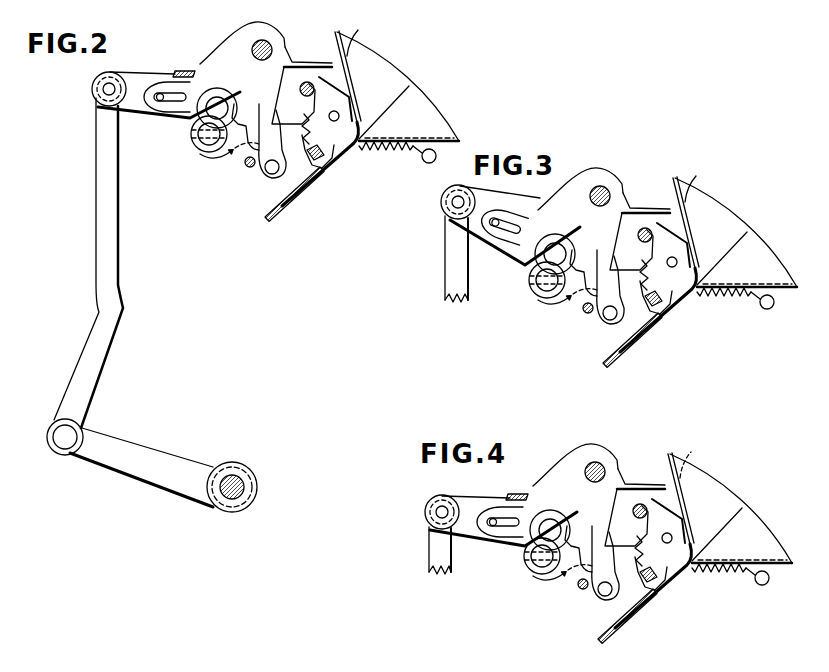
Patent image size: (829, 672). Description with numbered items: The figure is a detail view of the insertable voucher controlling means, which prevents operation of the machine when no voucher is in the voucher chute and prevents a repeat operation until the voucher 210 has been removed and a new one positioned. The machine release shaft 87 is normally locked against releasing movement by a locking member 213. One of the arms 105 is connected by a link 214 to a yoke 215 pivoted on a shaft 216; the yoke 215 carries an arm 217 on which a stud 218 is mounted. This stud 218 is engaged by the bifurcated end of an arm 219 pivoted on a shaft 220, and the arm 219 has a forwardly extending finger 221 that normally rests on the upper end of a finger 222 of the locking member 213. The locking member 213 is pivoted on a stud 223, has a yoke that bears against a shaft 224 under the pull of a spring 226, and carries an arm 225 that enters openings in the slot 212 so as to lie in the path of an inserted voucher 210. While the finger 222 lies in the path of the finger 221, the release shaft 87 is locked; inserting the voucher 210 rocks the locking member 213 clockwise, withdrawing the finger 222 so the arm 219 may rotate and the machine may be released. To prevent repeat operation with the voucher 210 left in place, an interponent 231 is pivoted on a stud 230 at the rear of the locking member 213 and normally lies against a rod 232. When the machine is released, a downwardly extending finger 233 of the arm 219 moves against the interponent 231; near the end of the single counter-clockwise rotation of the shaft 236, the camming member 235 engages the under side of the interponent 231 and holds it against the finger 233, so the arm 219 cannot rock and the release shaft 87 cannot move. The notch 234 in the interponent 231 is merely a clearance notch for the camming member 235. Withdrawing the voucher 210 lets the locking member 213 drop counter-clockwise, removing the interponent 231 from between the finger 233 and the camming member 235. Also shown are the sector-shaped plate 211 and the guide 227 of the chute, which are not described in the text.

In FIG. 2, the machine release shaft 87 is at (236, 473).
In FIG. 2, the arm 105 is at (130, 463).
In FIG. 2, the voucher 210 is at (384, 112).
In FIG. 3, the voucher 210 is at (742, 246).
In FIG. 4, the voucher 210 is at (744, 530).
In FIG. 2, the sector plate 211 is at (398, 86).
In FIG. 3, the sector plate 211 is at (736, 232).
In FIG. 4, the sector plate 211 is at (731, 508).
In FIG. 2, the slot 212 is at (386, 134).
In FIG. 3, the slot 212 is at (724, 283).
In FIG. 4, the slot 212 is at (719, 568).
In FIG. 2, the locking member 213 is at (336, 118).
In FIG. 3, the locking member 213 is at (671, 264).
In FIG. 4, the locking member 213 is at (654, 540).
In FIG. 2, the link 214 is at (111, 263).
In FIG. 3, the link 214 is at (435, 259).
In FIG. 4, the link 214 is at (419, 550).
In FIG. 2, the yoke 215 is at (121, 78).
In FIG. 3, the yoke 215 is at (440, 212).
In FIG. 4, the yoke 215 is at (427, 502).
In FIG. 2, the shaft 216 is at (224, 95).
In FIG. 3, the shaft 216 is at (525, 254).
In FIG. 4, the shaft 216 is at (550, 530).
In FIG. 2, the arm 217 is at (169, 117).
In FIG. 2, the stud 218 is at (152, 73).
In FIG. 3, the stud 218 is at (515, 221).
In FIG. 4, the stud 218 is at (503, 510).
In FIG. 2, the arm 219 is at (238, 43).
In FIG. 3, the arm 219 is at (586, 177).
In FIG. 4, the arm 219 is at (575, 462).
In FIG. 2, the shaft 220 is at (230, 53).
In FIG. 3, the shaft 220 is at (584, 182).
In FIG. 4, the shaft 220 is at (567, 471).
In FIG. 2, the finger 221 is at (308, 40).
In FIG. 3, the finger 221 is at (646, 196).
In FIG. 4, the finger 221 is at (634, 454).
In FIG. 2, the finger 222 is at (380, 43).
In FIG. 3, the finger 222 is at (656, 182).
In FIG. 4, the finger 222 is at (703, 460).
In FIG. 2, the stud 223 is at (364, 109).
In FIG. 3, the stud 223 is at (712, 262).
In FIG. 4, the stud 223 is at (693, 524).
In FIG. 2, the shaft 224 is at (327, 92).
In FIG. 3, the shaft 224 is at (637, 241).
In FIG. 4, the shaft 224 is at (631, 516).
In FIG. 2, the arm 225 is at (343, 158).
In FIG. 3, the arm 225 is at (677, 305).
In FIG. 4, the arm 225 is at (675, 582).
In FIG. 2, the spring 226 is at (418, 169).
In FIG. 3, the spring 226 is at (757, 314).
In FIG. 4, the spring 226 is at (756, 590).
In FIG. 2, the guide plate 227 is at (325, 194).
In FIG. 3, the guide plate 227 is at (646, 340).
In FIG. 4, the guide plate 227 is at (635, 616).
In FIG. 2, the stud 230 is at (301, 157).
In FIG. 3, the stud 230 is at (589, 309).
In FIG. 4, the stud 230 is at (588, 586).
In FIG. 2, the interponent 231 is at (234, 167).
In FIG. 3, the interponent 231 is at (565, 291).
In FIG. 4, the interponent 231 is at (558, 568).
In FIG. 2, the rod 232 is at (228, 184).
In FIG. 3, the rod 232 is at (568, 327).
In FIG. 4, the rod 232 is at (563, 603).
In FIG. 2, the finger 233 is at (307, 78).
In FIG. 3, the finger 233 is at (632, 245).
In FIG. 4, the finger 233 is at (676, 502).
In FIG. 2, the notch 234 is at (298, 121).
In FIG. 2, the camming member 235 is at (212, 171).
In FIG. 3, the camming member 235 is at (527, 308).
In FIG. 4, the camming member 235 is at (527, 581).
In FIG. 2, the shaft 236 is at (182, 140).
In FIG. 3, the shaft 236 is at (521, 280).
In FIG. 4, the shaft 236 is at (515, 556).